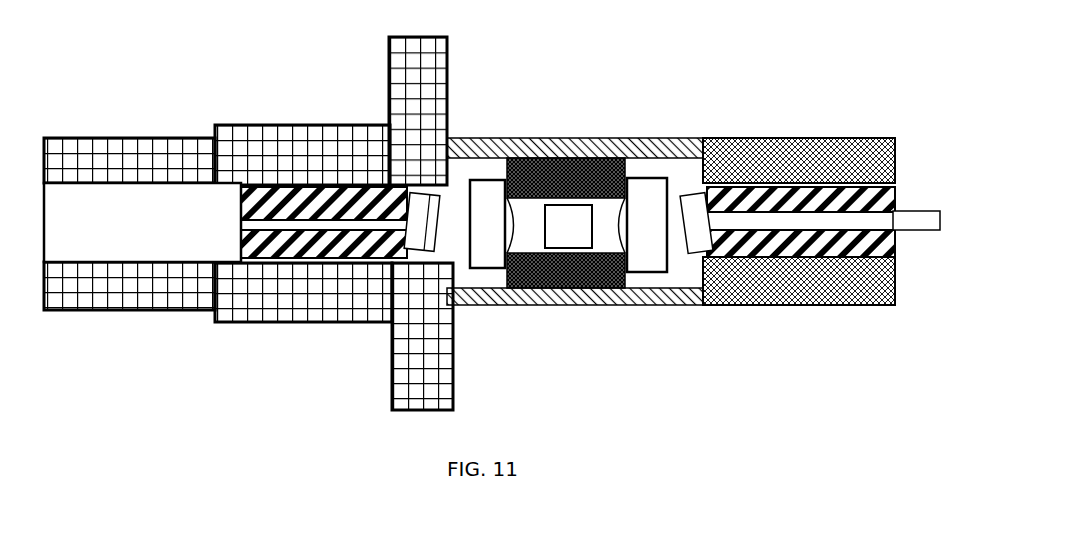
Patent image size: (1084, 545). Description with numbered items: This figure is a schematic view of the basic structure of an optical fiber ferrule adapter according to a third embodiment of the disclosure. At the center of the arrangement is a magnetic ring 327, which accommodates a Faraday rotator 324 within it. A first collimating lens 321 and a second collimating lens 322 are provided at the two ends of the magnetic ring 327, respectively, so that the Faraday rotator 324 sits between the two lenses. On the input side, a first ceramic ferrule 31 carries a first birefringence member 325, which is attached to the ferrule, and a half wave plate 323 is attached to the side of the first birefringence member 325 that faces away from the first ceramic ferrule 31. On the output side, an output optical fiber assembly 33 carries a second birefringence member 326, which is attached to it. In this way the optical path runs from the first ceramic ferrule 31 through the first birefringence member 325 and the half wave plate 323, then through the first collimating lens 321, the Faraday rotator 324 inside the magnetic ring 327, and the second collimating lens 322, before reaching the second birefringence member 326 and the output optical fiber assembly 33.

The first ceramic ferrule 31 is at (225, 197).
The first collimating lens 321 is at (505, 138).
The second collimating lens 322 is at (652, 280).
The half wave plate 323 is at (438, 212).
The Faraday rotator 324 is at (572, 212).
The first birefringence member 325 is at (482, 182).
The second birefringence member 326 is at (692, 195).
The magnetic ring 327 is at (671, 174).
The output optical fiber assembly 33 is at (912, 210).